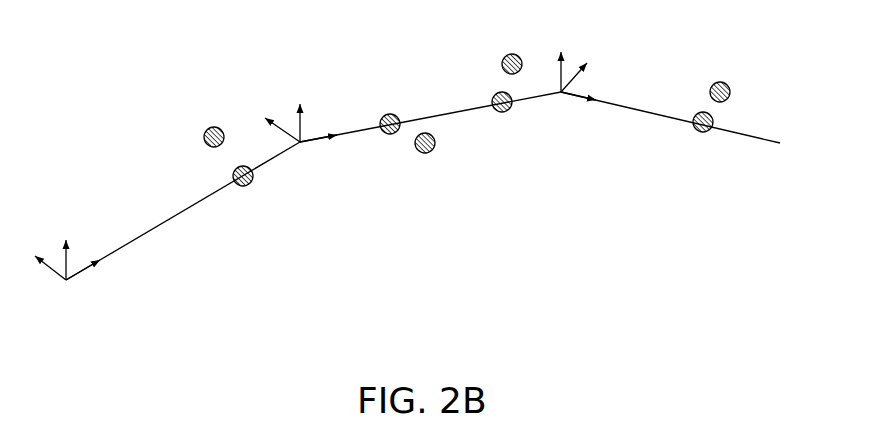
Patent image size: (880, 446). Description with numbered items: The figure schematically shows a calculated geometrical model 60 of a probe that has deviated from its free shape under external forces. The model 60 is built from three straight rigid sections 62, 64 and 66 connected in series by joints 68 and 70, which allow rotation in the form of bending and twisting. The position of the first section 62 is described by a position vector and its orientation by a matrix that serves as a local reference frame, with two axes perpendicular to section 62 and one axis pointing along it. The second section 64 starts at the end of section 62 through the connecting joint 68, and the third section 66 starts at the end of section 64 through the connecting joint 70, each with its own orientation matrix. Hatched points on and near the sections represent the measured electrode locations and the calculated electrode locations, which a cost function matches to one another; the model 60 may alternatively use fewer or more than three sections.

The geometrical model 60 is at (663, 268).
The straight rigid section 62 is at (187, 212).
The straight rigid section 64 is at (468, 112).
The straight rigid section 66 is at (750, 135).
The joint 68 is at (298, 145).
The joint 70 is at (573, 97).